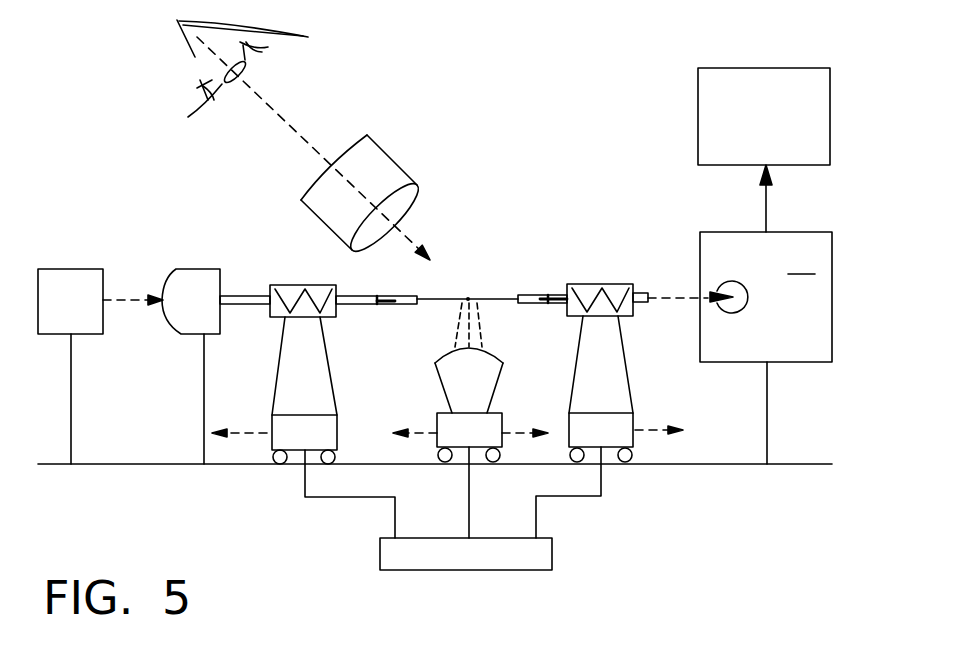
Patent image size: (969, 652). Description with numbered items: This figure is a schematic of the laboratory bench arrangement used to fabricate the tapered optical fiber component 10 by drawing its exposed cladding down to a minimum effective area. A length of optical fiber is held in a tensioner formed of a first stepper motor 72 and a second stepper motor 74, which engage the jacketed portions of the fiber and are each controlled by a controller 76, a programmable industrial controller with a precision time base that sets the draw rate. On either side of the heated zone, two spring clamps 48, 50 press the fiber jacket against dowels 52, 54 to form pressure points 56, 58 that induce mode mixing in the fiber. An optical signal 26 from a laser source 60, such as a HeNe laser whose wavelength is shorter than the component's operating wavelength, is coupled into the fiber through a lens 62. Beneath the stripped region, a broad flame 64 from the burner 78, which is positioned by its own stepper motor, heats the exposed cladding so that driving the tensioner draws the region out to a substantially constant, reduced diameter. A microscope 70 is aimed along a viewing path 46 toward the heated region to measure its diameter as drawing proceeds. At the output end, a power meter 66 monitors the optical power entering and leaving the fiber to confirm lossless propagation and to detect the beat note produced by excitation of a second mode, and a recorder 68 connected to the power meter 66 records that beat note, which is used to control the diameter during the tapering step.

The tapered optical fiber component 10 is at (468, 298).
The optical signal 26 is at (113, 298).
The light beam 46 is at (403, 230).
The spring clamp 48 is at (378, 295).
The spring clamp 50 is at (548, 296).
The dowel 52 is at (378, 307).
The dowel 54 is at (548, 304).
The pressure point 56 is at (390, 301).
The pressure point 58 is at (552, 299).
The laser source 60 is at (70, 366).
The lens 62 is at (216, 366).
The broad flame 64 is at (473, 298).
The power meter 66 is at (740, 314).
The recorder 68 is at (764, 116).
The microscope 70 is at (378, 163).
The first stepper motor 72 is at (314, 411).
The second stepper motor 74 is at (609, 411).
The controller 76 is at (552, 543).
The burner 78 is at (470, 443).